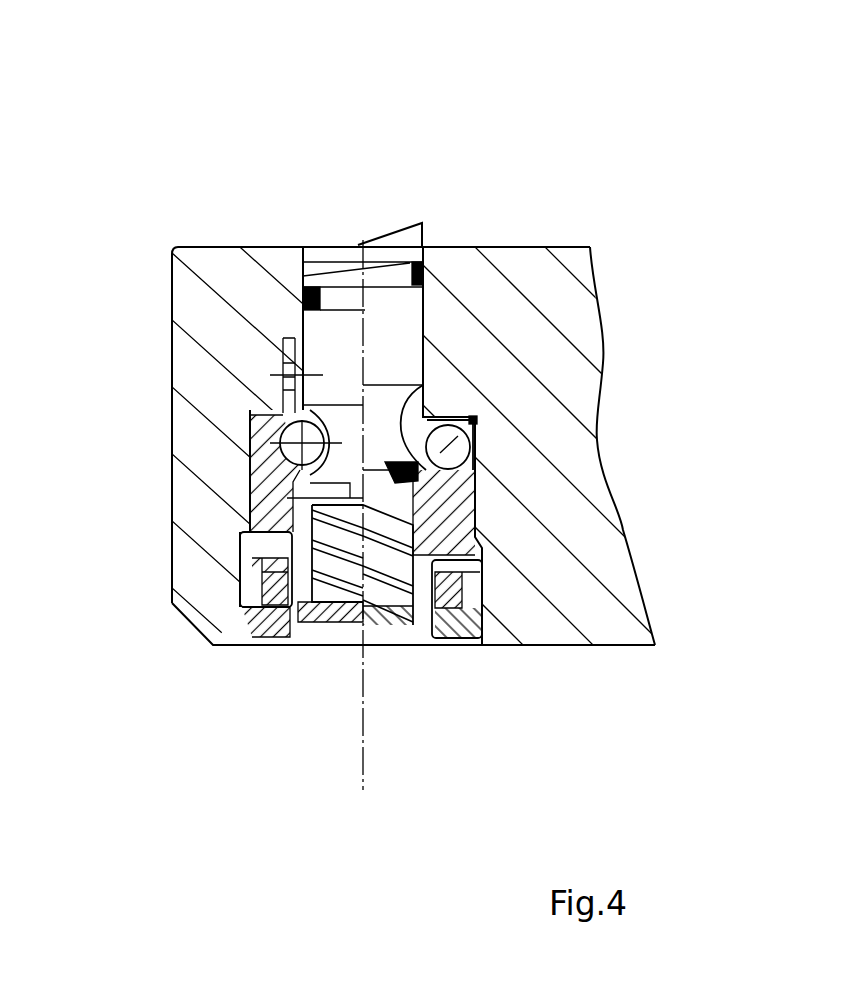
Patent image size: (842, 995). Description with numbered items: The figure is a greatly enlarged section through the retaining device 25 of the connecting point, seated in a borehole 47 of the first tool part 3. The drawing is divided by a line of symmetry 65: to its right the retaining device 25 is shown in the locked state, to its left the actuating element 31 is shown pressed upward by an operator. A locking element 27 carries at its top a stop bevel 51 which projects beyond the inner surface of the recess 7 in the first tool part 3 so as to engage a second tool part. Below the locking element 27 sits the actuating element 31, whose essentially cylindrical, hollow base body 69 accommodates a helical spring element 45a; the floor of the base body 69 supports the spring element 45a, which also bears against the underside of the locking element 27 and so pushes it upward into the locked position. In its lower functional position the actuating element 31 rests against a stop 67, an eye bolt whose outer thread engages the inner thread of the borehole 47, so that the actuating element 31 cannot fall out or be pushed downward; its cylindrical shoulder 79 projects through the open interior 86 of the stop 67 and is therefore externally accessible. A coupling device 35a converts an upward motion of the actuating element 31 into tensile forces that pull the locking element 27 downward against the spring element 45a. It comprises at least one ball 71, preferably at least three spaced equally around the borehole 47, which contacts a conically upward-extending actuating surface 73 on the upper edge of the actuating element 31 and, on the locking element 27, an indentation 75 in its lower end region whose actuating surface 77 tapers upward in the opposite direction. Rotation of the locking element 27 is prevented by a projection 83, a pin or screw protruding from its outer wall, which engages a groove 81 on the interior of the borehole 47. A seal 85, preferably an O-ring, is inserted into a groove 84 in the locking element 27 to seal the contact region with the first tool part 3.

The first tool part 3 is at (560, 368).
The recess 7 is at (486, 245).
The retaining device 25 is at (252, 662).
The locking element 27 is at (398, 327).
The actuating element 31 is at (495, 478).
The coupling device 35a is at (493, 436).
The spring element 45a is at (396, 608).
The borehole 47 is at (430, 522).
The stop bevel 51 is at (431, 256).
The line of symmetry 65 is at (363, 718).
The stop 67 is at (288, 625).
The base body 69 is at (460, 553).
The ball 71 is at (427, 414).
The actuating surface 73 is at (282, 408).
The indentation 75 is at (427, 317).
The actuating surface 77 is at (427, 385).
The cylindrical shoulder 79 is at (332, 608).
The groove 81 is at (278, 340).
The projection 83 is at (285, 466).
The groove 84 is at (391, 222).
The seal 85 is at (453, 247).
The open interior 86 is at (418, 503).